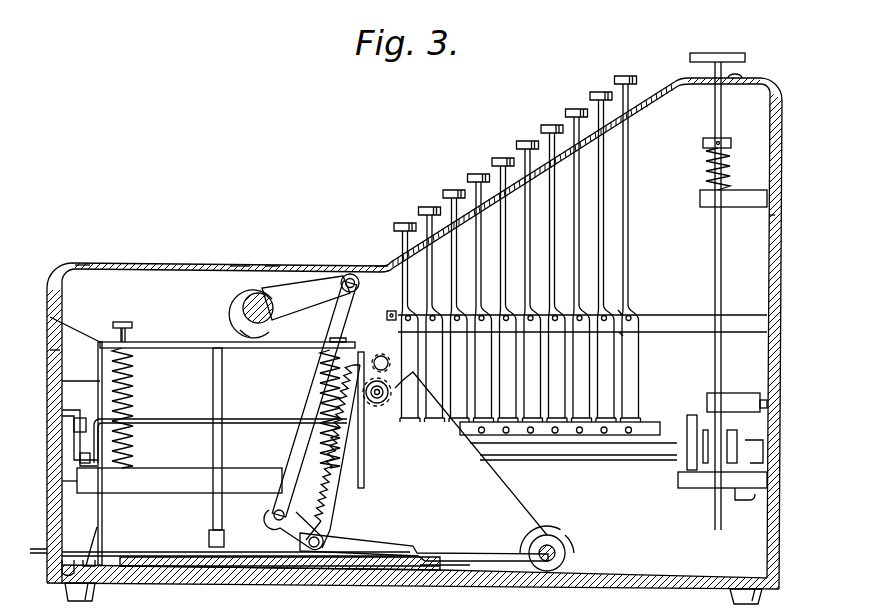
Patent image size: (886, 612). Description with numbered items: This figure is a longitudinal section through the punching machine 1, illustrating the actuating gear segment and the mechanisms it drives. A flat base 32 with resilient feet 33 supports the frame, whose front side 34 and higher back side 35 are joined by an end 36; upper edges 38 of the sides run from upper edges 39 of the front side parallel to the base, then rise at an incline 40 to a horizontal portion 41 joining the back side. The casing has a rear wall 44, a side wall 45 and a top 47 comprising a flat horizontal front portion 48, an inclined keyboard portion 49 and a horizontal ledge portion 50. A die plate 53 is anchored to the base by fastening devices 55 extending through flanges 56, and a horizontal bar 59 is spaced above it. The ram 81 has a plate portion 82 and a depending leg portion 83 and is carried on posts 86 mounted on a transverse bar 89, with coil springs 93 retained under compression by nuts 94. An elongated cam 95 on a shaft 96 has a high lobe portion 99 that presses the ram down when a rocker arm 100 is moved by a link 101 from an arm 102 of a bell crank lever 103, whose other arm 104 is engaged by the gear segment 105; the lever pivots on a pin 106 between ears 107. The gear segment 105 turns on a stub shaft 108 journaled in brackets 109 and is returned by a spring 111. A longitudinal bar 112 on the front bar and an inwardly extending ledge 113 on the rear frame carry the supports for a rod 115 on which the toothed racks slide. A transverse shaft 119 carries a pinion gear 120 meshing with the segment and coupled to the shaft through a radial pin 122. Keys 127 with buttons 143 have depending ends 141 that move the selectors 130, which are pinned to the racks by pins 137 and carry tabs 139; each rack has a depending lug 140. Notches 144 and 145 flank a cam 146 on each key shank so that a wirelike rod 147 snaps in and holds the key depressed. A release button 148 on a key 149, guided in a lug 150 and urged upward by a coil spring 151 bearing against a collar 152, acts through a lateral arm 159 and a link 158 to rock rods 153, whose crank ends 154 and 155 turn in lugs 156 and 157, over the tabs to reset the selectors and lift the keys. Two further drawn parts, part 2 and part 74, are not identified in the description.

The punching machine 1 is at (782, 100).
The bracket 2 is at (44, 553).
The base 32 is at (700, 580).
The resilient feet 33 is at (752, 590).
The front side 34 is at (47, 312).
The back side 35 is at (781, 218).
The end 36 is at (160, 264).
The upper edges 38 is at (238, 264).
The upper edges of front side 39 is at (80, 263).
The incline 40 is at (645, 90).
The horizontal portion 41 is at (745, 80).
The rear wall 44 is at (47, 352).
The side wall 45 is at (781, 186).
The top 47 is at (382, 265).
The flat horizontal front portion 48 is at (272, 264).
The inclined keyboard portion 49 is at (470, 200).
The horizontal ledge portion 50 is at (698, 80).
The die plate 53 is at (263, 568).
The fastening devices 55 is at (97, 543).
The flanges 56 is at (428, 578).
The horizontal bar 59 is at (62, 481).
The stop 74 is at (390, 340).
The ram 81 is at (50, 318).
The plate portion 82 is at (195, 348).
The depending leg portion 83 is at (62, 381).
The posts 86 is at (130, 336).
The transverse bar 89 is at (172, 492).
The coil springs 93 is at (133, 378).
The nuts 94 is at (123, 326).
The elongated cam 95 is at (232, 308).
The shaft 96 is at (258, 297).
The high lobe portion 99 is at (234, 336).
The rocker arm 100 is at (297, 285).
The link 101 is at (343, 328).
The arm 102 is at (179, 480).
The bell crank lever 103 is at (318, 528).
The other arm 104 is at (375, 570).
The gear segment 105 is at (352, 480).
The pin 106 is at (328, 558).
The ears 107 is at (282, 562).
The stub shaft 108 is at (560, 542).
The brackets 109 is at (595, 560).
The spring 111 is at (580, 548).
The longitudinal bar 112 is at (62, 414).
The ledge 113 is at (760, 482).
The rod 115 is at (86, 415).
The transverse shaft 119 is at (380, 396).
The pinion gear 120 is at (382, 388).
The radial pin 122 is at (381, 362).
The keys 127 is at (614, 82).
The selectors 130 is at (578, 449).
The pins 137 is at (550, 434).
The tabs 139 is at (582, 435).
The depending lug 140 is at (362, 445).
The depending end 141 is at (630, 378).
The buttons 143 is at (530, 143).
The notch 144 is at (636, 312).
The notch 145 is at (640, 332).
The cam 146 is at (640, 316).
The wirelike rods 147 is at (645, 331).
The release button 148 is at (736, 54).
The release key 149 is at (722, 108).
The lug 150 is at (740, 190).
The coil spring 151 is at (728, 170).
The collar 152 is at (730, 141).
The rods 153 is at (690, 418).
The crank end 154 is at (62, 422).
The crank end 155 is at (742, 442).
The lug 156 is at (80, 456).
The lug 157 is at (735, 490).
The link 158 is at (768, 405).
The lateral arm 159 is at (740, 394).